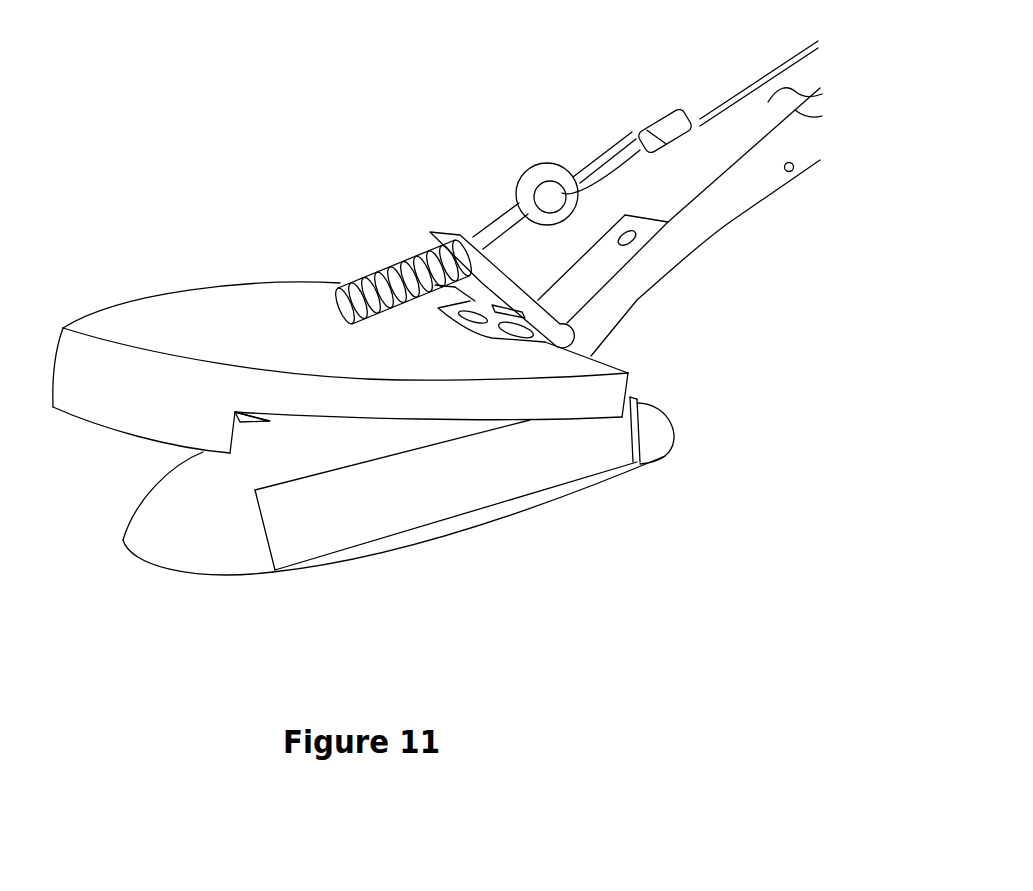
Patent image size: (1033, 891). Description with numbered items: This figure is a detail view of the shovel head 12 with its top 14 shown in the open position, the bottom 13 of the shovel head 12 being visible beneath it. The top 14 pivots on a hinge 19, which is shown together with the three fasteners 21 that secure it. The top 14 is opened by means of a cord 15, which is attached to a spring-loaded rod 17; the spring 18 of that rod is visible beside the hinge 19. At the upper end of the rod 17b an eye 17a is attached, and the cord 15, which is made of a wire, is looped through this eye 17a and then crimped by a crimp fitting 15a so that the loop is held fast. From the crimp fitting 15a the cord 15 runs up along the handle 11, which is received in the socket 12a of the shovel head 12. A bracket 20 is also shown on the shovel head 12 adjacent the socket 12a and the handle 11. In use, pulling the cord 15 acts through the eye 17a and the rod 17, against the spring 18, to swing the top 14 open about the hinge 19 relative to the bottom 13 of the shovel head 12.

The handle 11 is at (706, 222).
The shovel head 12 is at (255, 257).
The socket 12a is at (725, 202).
The bottom 13 is at (250, 552).
The top 14 is at (200, 305).
The cord 15 is at (755, 72).
The crimp fitting 15a is at (667, 120).
The spring-loaded rod 17 is at (487, 153).
The eye 17a is at (543, 163).
The rod 17b is at (487, 218).
The spring 18 is at (392, 257).
The hinge 19 is at (443, 316).
The bracket 20 is at (583, 270).
The fasteners 21 is at (486, 325).